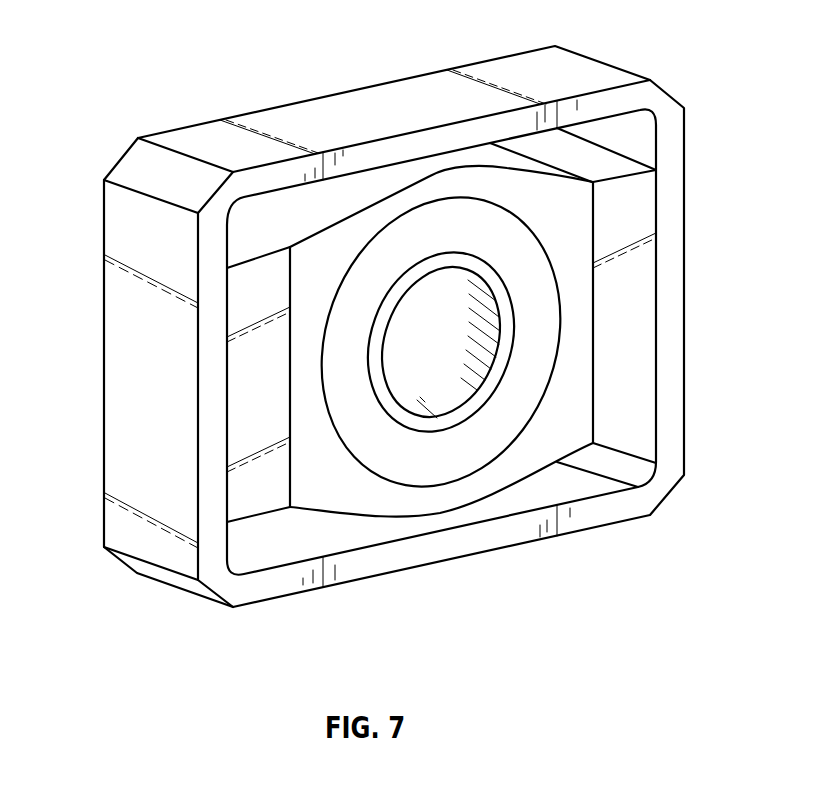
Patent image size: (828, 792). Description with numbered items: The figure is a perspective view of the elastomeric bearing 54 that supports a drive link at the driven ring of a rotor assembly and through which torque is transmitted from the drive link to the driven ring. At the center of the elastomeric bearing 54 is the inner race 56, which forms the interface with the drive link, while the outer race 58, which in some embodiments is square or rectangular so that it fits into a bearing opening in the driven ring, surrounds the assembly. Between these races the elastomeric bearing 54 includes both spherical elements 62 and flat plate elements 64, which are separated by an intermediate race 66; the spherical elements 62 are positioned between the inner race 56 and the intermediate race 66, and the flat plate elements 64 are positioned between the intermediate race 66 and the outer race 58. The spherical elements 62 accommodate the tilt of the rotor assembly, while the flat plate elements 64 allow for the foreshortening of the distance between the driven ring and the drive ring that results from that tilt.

The elastomeric bearing 54 is at (161, 88).
The inner race 56 is at (460, 262).
The outer race 58 is at (128, 232).
The spherical elements 62 is at (468, 478).
The flat plate elements 64 is at (232, 364).
The intermediate race 66 is at (385, 502).